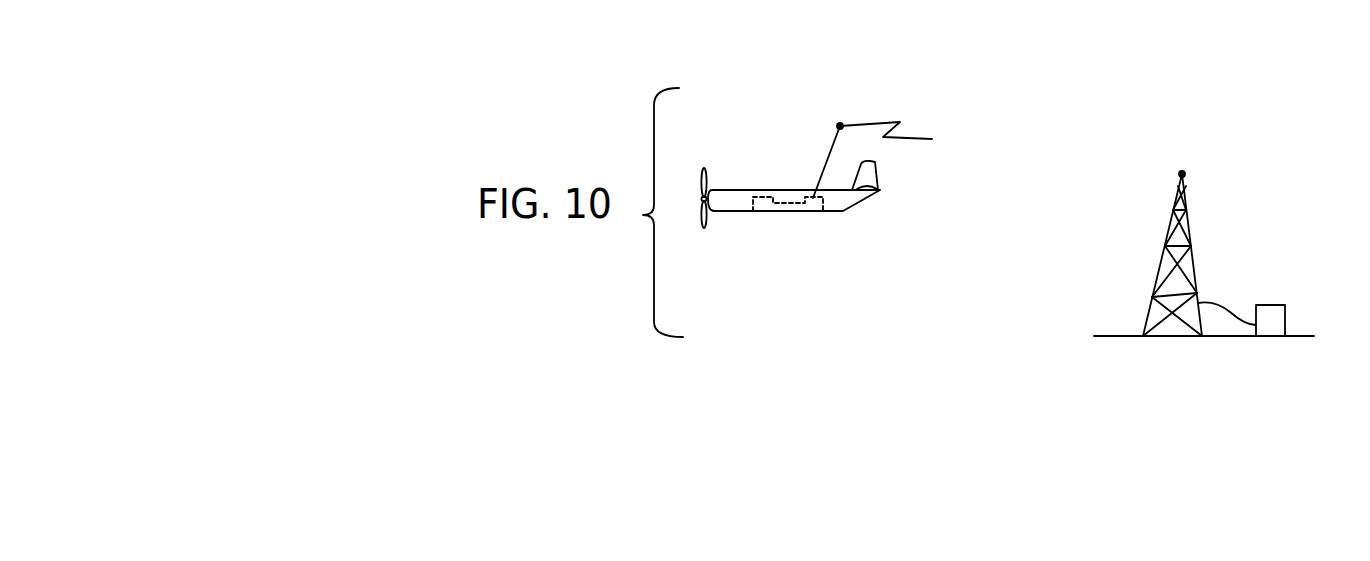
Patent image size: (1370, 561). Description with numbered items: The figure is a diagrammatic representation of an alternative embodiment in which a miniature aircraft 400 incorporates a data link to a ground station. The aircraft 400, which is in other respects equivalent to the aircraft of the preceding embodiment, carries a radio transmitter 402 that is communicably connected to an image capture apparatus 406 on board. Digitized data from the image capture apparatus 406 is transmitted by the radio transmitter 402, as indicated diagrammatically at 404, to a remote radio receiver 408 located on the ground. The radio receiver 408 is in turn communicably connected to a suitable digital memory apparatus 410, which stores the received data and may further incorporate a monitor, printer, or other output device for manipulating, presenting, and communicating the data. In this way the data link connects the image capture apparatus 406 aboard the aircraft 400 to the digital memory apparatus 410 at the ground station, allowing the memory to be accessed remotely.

The aircraft 400 is at (766, 125).
The radio transmitter 402 is at (827, 212).
The transmitted digitized data 404 is at (918, 139).
The image capture apparatus 406 is at (763, 213).
The radio receiver 408 is at (1190, 229).
The digital memory apparatus 410 is at (1270, 305).